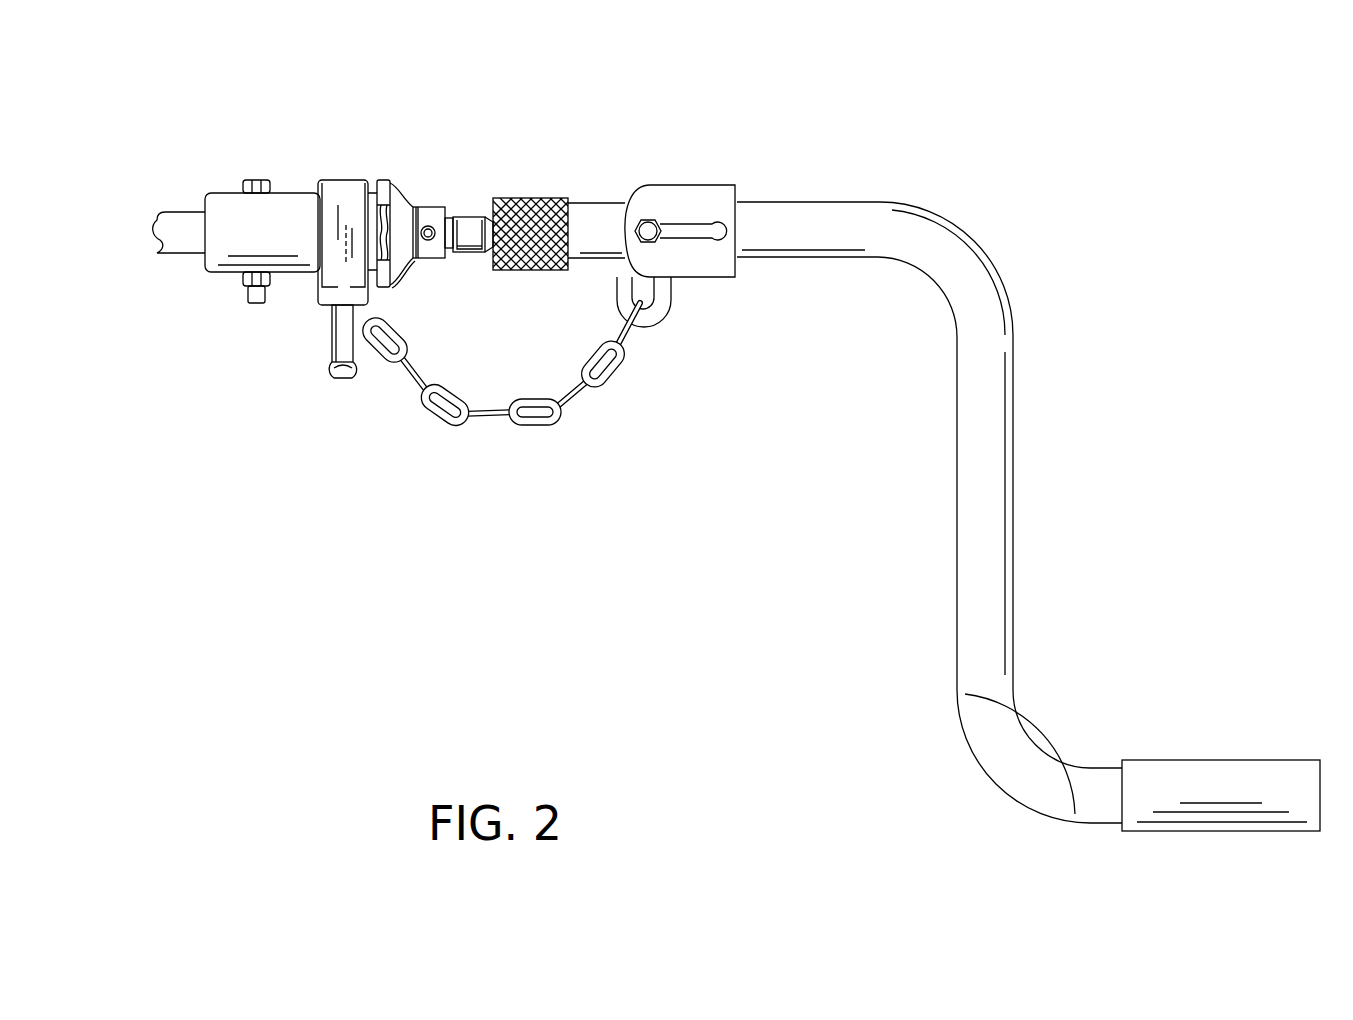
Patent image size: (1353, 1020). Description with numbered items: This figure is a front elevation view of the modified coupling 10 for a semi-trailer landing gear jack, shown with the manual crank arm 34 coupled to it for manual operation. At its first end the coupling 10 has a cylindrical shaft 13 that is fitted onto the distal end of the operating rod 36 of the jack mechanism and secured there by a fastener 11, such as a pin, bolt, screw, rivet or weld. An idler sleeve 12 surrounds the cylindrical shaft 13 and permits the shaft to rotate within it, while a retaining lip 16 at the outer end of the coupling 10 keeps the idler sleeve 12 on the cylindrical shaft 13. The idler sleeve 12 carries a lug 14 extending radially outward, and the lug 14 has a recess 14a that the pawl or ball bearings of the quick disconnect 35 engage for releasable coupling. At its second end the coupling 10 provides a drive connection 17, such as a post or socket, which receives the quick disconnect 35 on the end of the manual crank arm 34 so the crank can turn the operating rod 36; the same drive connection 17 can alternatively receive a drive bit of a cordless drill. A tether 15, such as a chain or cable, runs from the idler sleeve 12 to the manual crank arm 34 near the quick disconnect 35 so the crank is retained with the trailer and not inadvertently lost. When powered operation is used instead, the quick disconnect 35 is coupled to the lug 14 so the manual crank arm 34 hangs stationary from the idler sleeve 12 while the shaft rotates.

The coupling 10 is at (480, 129).
The fastener 11 is at (253, 188).
The idler sleeve 12 is at (340, 197).
The cylindrical shaft 13 is at (240, 220).
The lug 14 is at (343, 345).
The recess 14a is at (342, 375).
The tether 15 is at (527, 428).
The retaining lip 16 is at (385, 183).
The drive connection 17 is at (462, 253).
The manual crank arm 34 is at (995, 515).
The quick disconnect 35 is at (538, 208).
The operating rod 36 is at (165, 228).